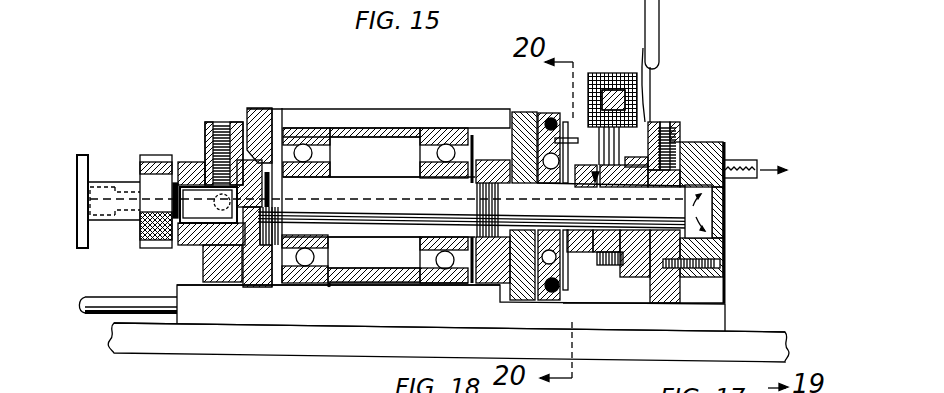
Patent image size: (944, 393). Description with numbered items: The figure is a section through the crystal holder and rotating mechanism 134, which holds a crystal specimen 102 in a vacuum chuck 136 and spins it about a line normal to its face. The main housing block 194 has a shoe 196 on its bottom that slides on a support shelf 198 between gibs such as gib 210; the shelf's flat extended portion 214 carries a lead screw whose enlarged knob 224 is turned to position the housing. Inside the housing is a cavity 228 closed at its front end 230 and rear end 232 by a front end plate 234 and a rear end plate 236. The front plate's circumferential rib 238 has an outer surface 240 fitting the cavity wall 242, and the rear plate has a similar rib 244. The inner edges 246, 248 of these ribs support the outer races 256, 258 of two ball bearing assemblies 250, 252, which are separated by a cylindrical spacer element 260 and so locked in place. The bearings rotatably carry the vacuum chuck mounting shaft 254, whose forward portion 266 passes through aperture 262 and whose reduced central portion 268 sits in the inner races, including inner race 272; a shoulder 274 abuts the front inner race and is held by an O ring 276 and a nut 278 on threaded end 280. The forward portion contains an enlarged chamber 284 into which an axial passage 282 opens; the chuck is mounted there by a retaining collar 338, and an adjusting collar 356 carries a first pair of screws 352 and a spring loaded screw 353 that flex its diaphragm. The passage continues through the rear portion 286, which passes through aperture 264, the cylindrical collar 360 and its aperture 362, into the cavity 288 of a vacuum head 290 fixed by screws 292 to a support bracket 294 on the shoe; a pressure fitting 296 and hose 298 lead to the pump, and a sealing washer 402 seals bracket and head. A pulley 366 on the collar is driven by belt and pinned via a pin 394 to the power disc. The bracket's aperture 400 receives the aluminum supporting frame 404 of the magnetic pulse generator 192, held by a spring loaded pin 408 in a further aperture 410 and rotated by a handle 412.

The crystal specimen 102 is at (80, 153).
The vacuum chuck 136 is at (105, 182).
The enlarged chamber 284 is at (182, 158).
The spring loaded screw 353 is at (187, 184).
The adjusting collar 356 is at (198, 158).
The front end plate 234 is at (223, 130).
The first pair of screws 352 is at (218, 124).
The forward portion 266 is at (190, 240).
The aperture 262 is at (266, 256).
The circumferential rib 238 is at (262, 130).
The outer surface 240 is at (280, 130).
The main housing block 194 is at (410, 116).
The crystal holder and rotating mechanism 134 is at (359, 115).
The front end 230 is at (330, 126).
The wall 242 is at (312, 128).
The shoulder 274 is at (292, 165).
The inner edge 246 is at (310, 270).
The outer race 256 is at (375, 157).
The cavity 228 is at (353, 264).
The vacuum chuck mounting shaft 254 is at (391, 198).
The axial passage 282 is at (350, 226).
The central portion 268 is at (392, 228).
The outer race 258 is at (430, 148).
The inner race 272 is at (430, 171).
The inner edge 248 is at (455, 283).
The ball bearing assembly 250 is at (329, 286).
The cylindrical spacer element 260 is at (380, 286).
The ball bearing assembly 252 is at (430, 284).
The O ring 276 is at (478, 166).
The threaded end 280 is at (482, 186).
The rib 244 is at (495, 284).
The nut 278 is at (475, 293).
The rear end 232 is at (485, 110).
The rear end plate 236 is at (525, 300).
The pulley 366 is at (533, 110).
The aperture 264 is at (528, 300).
The pin 394 is at (571, 122).
The cylindrical collar 360 is at (548, 178).
The aperture 362 is at (575, 190).
The aperture 400 is at (630, 264).
The rear portion 286 is at (585, 253).
The aluminum supporting frame 404 is at (635, 270).
The support bracket 294 is at (680, 290).
The screws 292 is at (723, 263).
The cavity 288 is at (725, 231).
The vacuum head 290 is at (725, 203).
The pressure fitting 296 is at (722, 143).
The hose 298 is at (747, 161).
The sealing washer 402 is at (695, 138).
The aperture 410 is at (665, 124).
The spring loaded pin 408 is at (665, 180).
The magnetic pulse generator 192 is at (605, 72).
The handle 412 is at (658, 50).
The shoe 196 is at (177, 286).
The support shelf 198 is at (772, 333).
The gib 210 is at (224, 311).
The flat extended portion 214 is at (221, 349).
The enlarged knob 224 is at (110, 296).
The retaining collar 338 is at (156, 247).